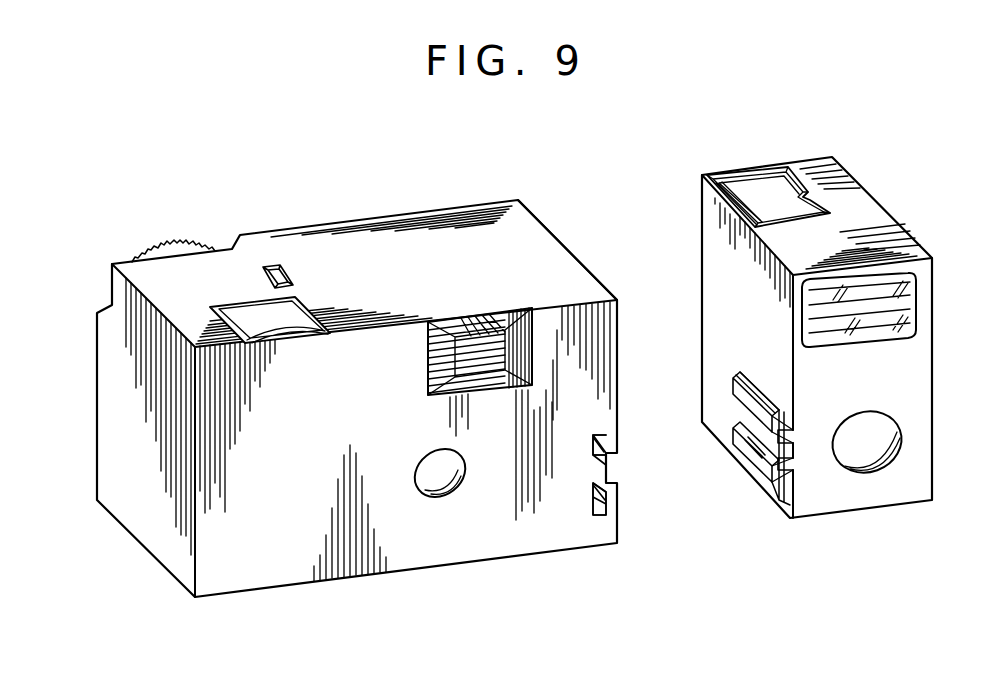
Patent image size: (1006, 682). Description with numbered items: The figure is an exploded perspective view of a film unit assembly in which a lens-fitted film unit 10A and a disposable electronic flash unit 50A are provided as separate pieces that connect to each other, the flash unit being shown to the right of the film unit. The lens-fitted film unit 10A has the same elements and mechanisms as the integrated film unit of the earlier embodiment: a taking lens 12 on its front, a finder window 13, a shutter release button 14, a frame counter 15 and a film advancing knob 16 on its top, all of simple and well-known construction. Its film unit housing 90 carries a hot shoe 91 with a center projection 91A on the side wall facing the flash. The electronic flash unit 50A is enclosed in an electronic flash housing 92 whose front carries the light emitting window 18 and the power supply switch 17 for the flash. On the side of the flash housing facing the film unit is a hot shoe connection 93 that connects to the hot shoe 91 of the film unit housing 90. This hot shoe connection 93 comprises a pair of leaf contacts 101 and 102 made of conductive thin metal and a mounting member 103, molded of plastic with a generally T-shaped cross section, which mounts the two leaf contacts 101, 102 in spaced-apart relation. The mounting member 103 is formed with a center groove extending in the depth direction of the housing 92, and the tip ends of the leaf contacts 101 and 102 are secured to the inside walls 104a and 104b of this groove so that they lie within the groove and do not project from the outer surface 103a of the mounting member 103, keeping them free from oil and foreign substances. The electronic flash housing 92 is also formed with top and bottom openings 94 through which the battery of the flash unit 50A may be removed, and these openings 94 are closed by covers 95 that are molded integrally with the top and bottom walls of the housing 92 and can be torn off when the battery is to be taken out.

The lens-fitted film unit 10A is at (432, 578).
The taking lens 12 is at (437, 468).
The finder window 13 is at (440, 361).
The shutter release button 14 is at (248, 318).
The frame counter 15 is at (290, 270).
The film advancing knob 16 is at (188, 240).
The power supply switch 17 is at (880, 447).
The light emitting window 18 is at (910, 302).
The electronic flash unit 50A is at (860, 516).
The film unit housing 90 is at (570, 543).
The hot shoe 91 is at (610, 455).
The center projection 91A is at (612, 470).
The electronic flash housing 92 is at (878, 225).
The hot shoe connection 93 is at (740, 489).
The top and bottom openings 94 is at (772, 227).
The covers 95 is at (748, 178).
The leaf contact 101 is at (735, 412).
The leaf contact 102 is at (752, 442).
The mounting member 103 is at (780, 497).
The outer surface of the mounting member 103a is at (732, 372).
The inside wall of the center groove 104a is at (798, 436).
The inside wall of the center groove 104b is at (795, 464).